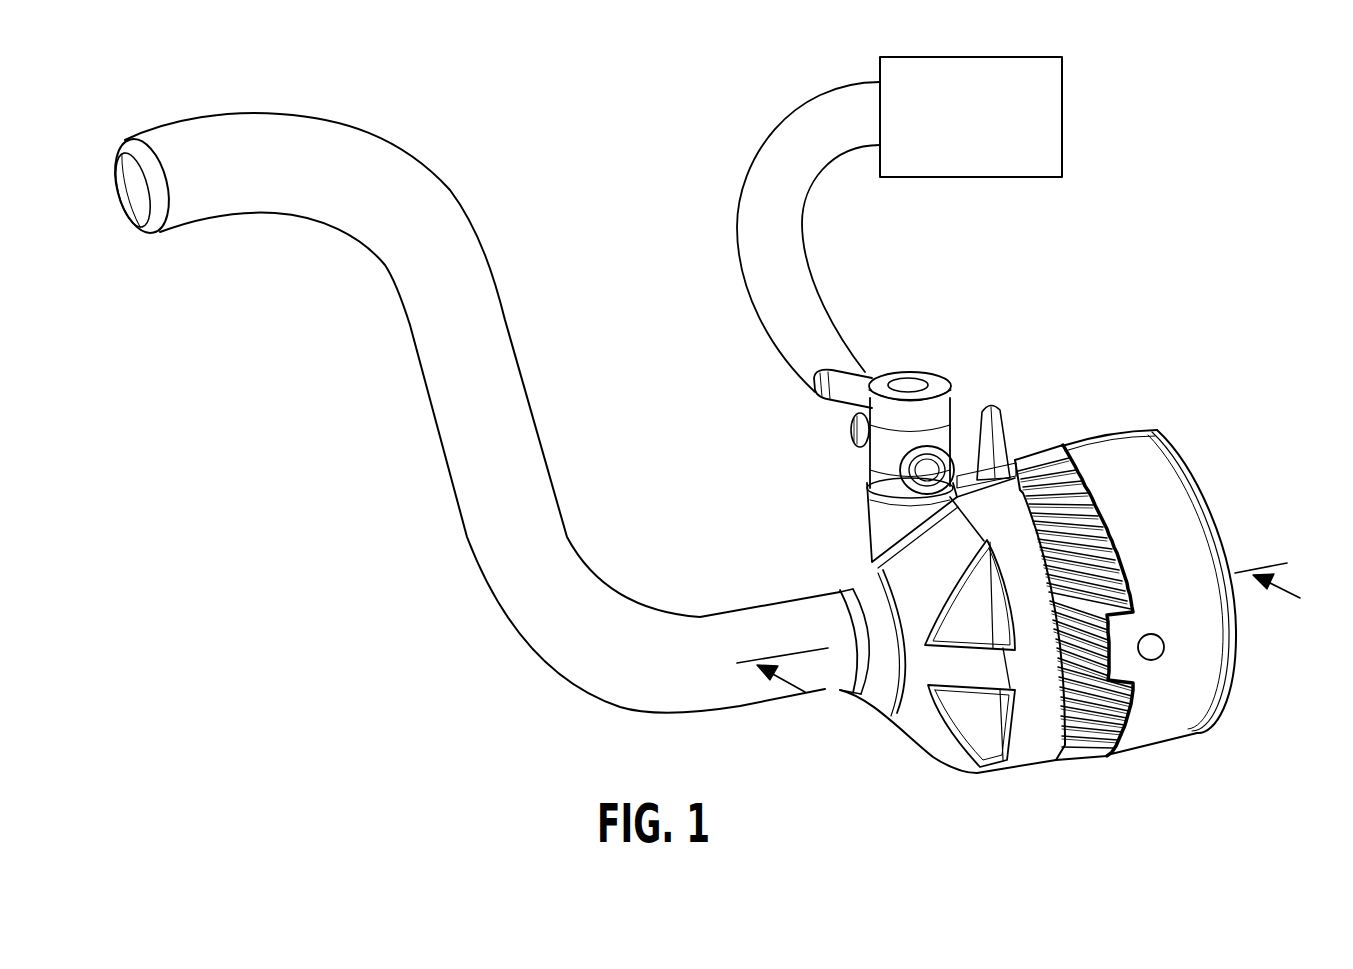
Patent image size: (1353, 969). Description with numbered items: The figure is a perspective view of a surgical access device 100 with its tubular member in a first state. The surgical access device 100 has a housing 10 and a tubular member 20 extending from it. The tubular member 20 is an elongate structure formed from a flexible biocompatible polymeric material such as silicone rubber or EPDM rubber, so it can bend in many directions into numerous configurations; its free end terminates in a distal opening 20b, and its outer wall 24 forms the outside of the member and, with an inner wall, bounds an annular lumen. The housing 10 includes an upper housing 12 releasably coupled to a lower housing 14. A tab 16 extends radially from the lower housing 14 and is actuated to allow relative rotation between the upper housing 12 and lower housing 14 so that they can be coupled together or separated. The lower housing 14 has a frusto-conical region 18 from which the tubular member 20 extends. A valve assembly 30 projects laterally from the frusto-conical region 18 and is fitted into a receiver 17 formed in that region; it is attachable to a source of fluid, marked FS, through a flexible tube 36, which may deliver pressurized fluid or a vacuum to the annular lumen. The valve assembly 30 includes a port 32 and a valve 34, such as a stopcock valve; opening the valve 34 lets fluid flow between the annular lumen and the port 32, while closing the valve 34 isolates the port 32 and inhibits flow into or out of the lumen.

The surgical access device 100 is at (611, 181).
The housing 10 is at (1073, 406).
The upper housing 12 is at (1143, 467).
The lower housing 14 is at (1027, 748).
The tab 16 is at (995, 405).
The receiver 17 is at (870, 526).
The frusto-conical region 18 is at (932, 745).
The tubular member 20 is at (366, 392).
The distal opening 20b is at (138, 198).
The outer wall 24 is at (462, 535).
The valve assembly 30 is at (908, 354).
The port 32 is at (858, 445).
The valve 34 is at (928, 368).
The flexible tube 36 is at (807, 197).